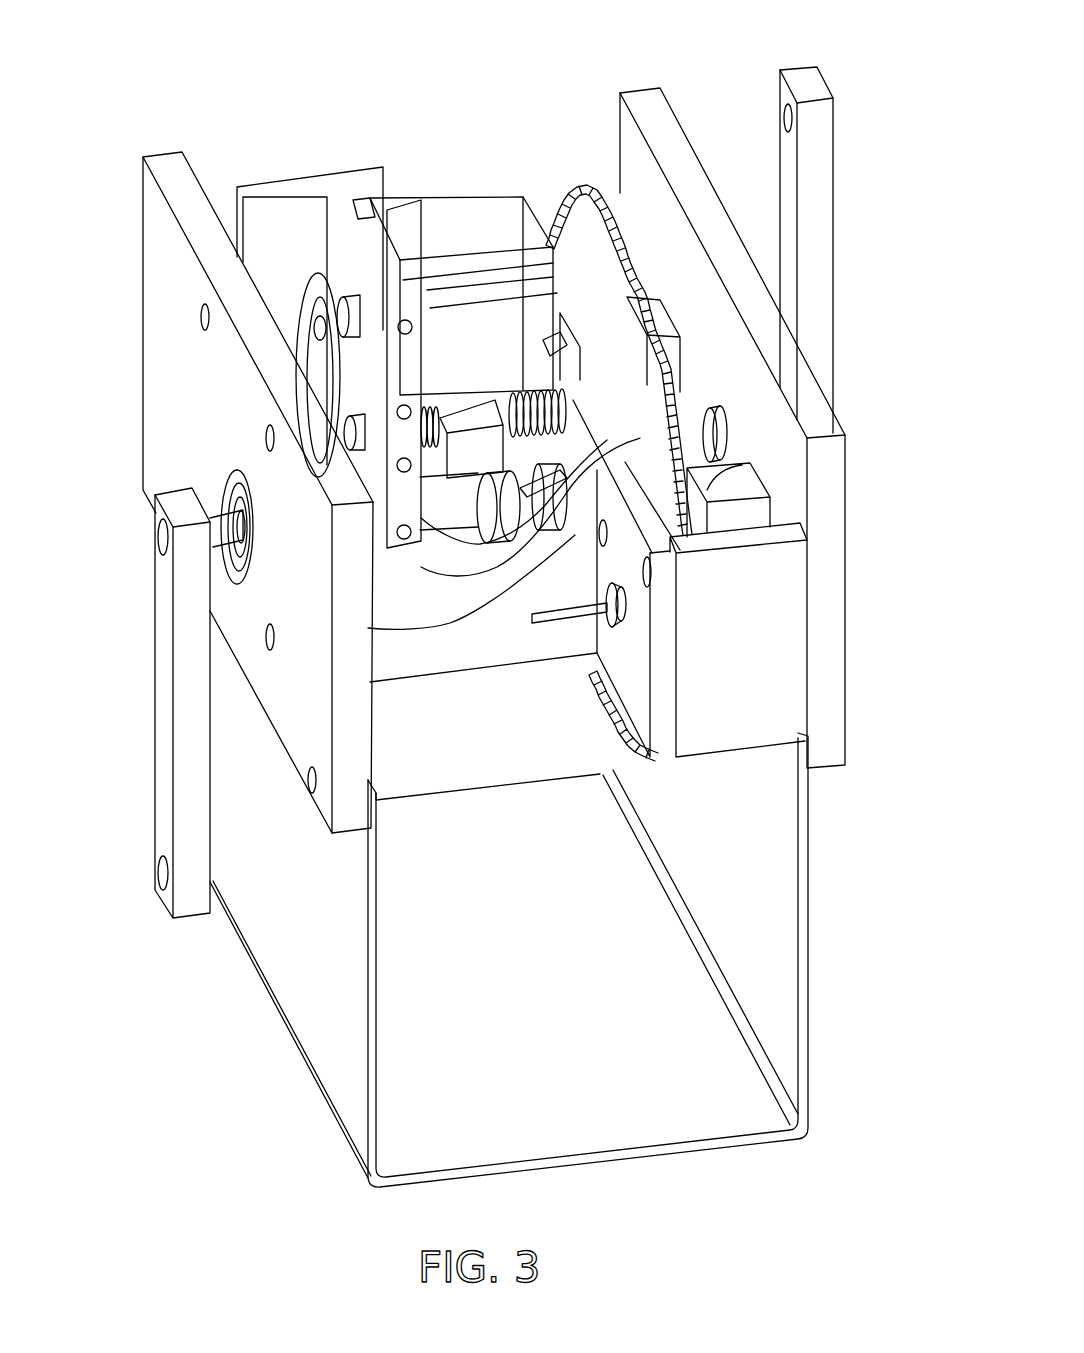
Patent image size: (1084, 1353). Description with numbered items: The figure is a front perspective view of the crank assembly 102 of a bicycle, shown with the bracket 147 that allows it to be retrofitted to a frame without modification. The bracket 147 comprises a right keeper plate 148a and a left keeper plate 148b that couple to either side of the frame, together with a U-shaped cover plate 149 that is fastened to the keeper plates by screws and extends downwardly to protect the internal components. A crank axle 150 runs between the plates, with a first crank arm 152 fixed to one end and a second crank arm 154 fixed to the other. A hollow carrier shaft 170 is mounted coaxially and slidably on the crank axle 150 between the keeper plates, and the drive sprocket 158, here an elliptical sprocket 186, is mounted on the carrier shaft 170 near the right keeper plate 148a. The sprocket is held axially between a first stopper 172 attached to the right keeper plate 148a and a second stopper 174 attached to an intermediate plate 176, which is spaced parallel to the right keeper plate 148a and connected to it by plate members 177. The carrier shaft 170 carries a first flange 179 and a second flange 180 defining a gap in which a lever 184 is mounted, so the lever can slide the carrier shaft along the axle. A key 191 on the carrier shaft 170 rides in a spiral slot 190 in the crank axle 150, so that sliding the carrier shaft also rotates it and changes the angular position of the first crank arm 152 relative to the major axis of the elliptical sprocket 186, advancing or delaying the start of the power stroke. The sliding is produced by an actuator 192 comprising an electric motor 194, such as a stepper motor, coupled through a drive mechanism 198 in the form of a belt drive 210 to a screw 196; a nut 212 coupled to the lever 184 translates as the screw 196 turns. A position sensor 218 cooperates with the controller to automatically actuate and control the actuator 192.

The crank assembly 102 is at (708, 62).
The bracket 147 is at (250, 1018).
The right keeper plate 148a is at (847, 742).
The left keeper plate 148b is at (183, 467).
The U-shaped cover plate 149 is at (805, 1027).
The crank axle 150 is at (213, 545).
The first crank arm 152 is at (813, 145).
The second crank arm 154 is at (160, 773).
The drive sprocket 158 is at (623, 313).
The carrier shaft 170 is at (655, 562).
The first stopper 172 is at (640, 435).
The second stopper 174 is at (566, 495).
The intermediate plate 176 is at (735, 700).
The plate members 177 is at (800, 733).
The first flange 179 is at (421, 567).
The second flange 180 is at (578, 475).
The lever 184 is at (383, 479).
The elliptical sprocket 186 is at (730, 428).
The spiral slot 190 is at (722, 465).
The key 191 is at (630, 600).
The actuator 192 is at (463, 188).
The electric motor 194 is at (417, 223).
The screw 196 is at (292, 291).
The drive mechanism 198 is at (497, 478).
The belt drive 210 is at (316, 266).
The nut 212 is at (362, 443).
The position sensor 218 is at (593, 600).